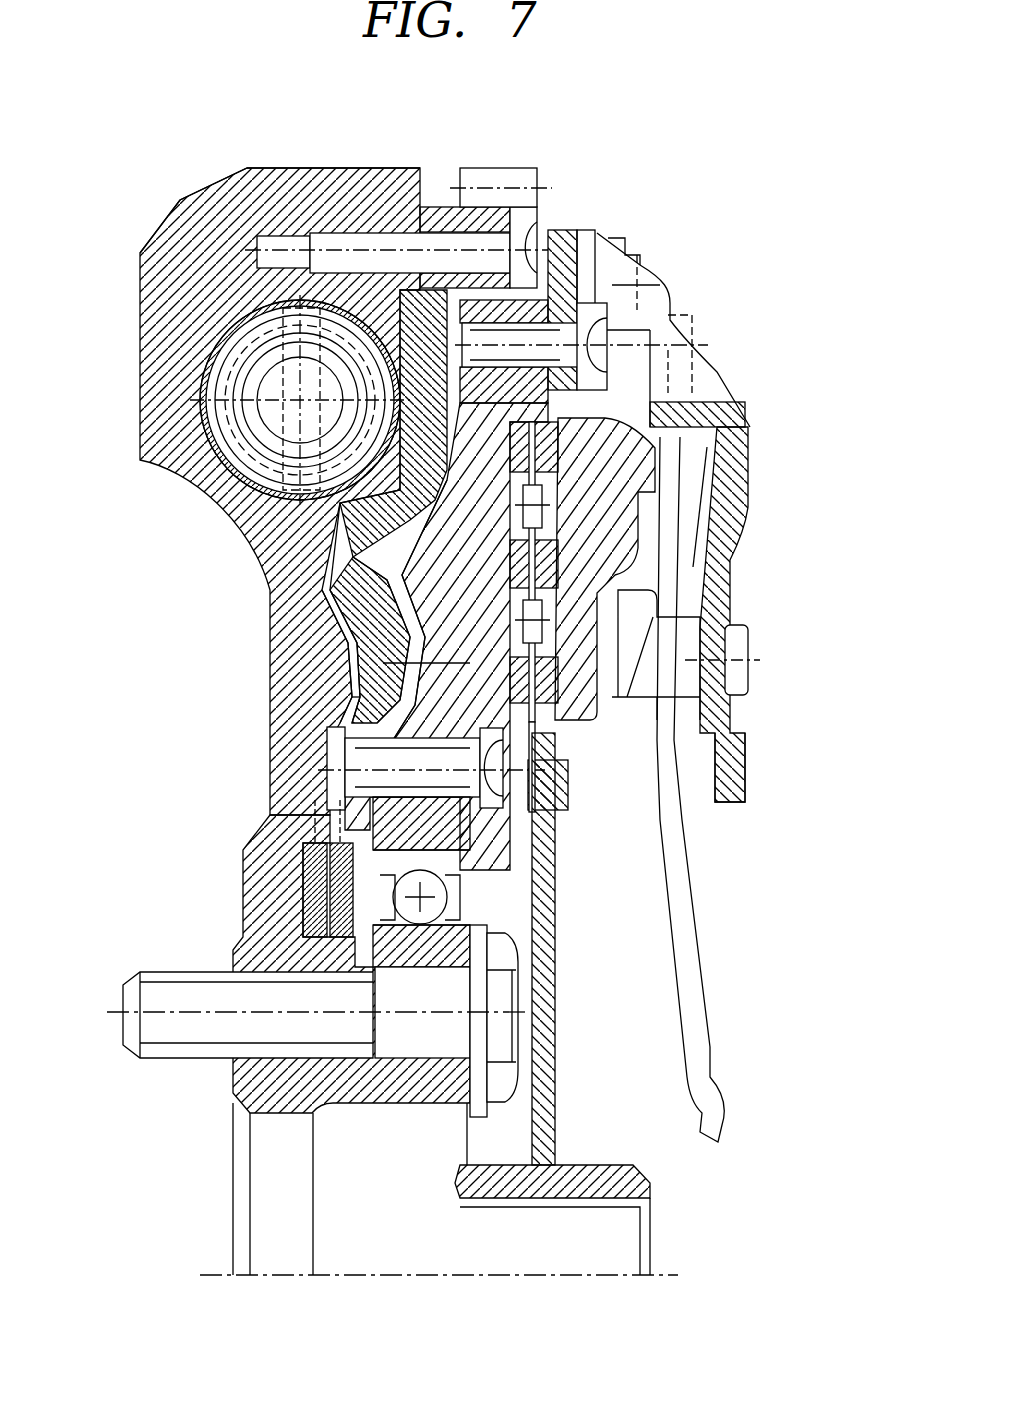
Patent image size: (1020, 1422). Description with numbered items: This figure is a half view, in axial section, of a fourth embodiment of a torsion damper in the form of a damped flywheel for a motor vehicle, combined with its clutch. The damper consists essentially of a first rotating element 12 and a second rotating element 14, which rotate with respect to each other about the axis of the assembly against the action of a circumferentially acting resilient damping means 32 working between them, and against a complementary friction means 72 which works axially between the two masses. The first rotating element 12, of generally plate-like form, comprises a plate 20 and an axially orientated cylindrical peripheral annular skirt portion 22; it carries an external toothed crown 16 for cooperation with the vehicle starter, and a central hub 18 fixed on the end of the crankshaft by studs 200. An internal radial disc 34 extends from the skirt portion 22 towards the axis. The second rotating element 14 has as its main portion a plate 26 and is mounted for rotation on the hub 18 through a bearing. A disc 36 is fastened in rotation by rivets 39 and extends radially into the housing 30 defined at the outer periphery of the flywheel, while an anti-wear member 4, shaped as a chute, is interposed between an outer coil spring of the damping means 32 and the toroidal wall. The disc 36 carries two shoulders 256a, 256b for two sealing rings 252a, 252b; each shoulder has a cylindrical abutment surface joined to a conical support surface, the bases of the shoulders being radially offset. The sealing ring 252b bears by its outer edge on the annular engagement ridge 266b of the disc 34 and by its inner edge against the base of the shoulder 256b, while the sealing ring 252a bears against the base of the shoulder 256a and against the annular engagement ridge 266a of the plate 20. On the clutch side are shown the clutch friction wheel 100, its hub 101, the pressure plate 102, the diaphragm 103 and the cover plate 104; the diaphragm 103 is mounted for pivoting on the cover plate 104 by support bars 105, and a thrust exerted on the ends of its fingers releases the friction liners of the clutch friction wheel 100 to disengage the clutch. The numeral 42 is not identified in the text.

The first rotating element 12 is at (213, 167).
The axially orientated cylindrical peripheral annular skirt portion 22 is at (310, 195).
The housing 30 is at (375, 300).
The internal radial disc 34 is at (428, 213).
The external toothed crown 16 is at (505, 170).
The anti-wear member 4 is at (245, 305).
The shaft 42 is at (290, 377).
The circumferentially acting resilient damping means 32 is at (228, 383).
The plate 20 is at (140, 421).
The sealing ring 252b is at (560, 463).
The shoulder 256b is at (598, 507).
The pressure plate 102 is at (560, 533).
The plate 26 is at (690, 568).
The support bars 105 is at (752, 636).
The clutch friction wheel 100 is at (562, 640).
The disc 36 is at (640, 690).
The cover plate 104 is at (745, 775).
The rivets 39 is at (472, 758).
The second rotating element 14 is at (520, 860).
The diaphragm 103 is at (712, 1050).
The hub 101 is at (652, 1190).
The central hub 18 is at (405, 1100).
The studs 200 is at (170, 1060).
The complementary friction means 72 is at (293, 866).
The annular engagement ridge 266a is at (345, 712).
The sealing ring 252a is at (345, 662).
The shoulder 256a is at (325, 600).
The annular engagement ridge 266b is at (325, 598).